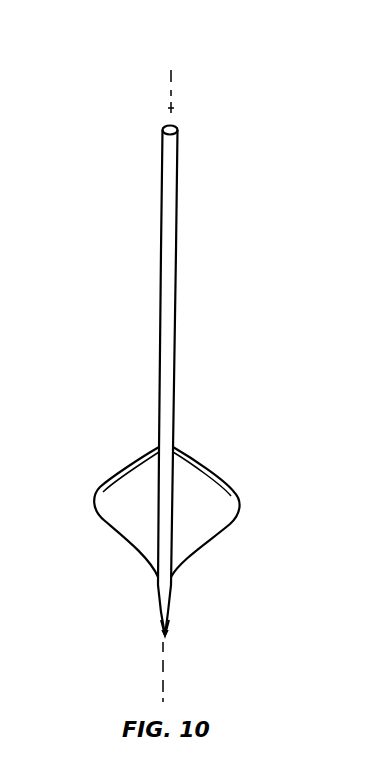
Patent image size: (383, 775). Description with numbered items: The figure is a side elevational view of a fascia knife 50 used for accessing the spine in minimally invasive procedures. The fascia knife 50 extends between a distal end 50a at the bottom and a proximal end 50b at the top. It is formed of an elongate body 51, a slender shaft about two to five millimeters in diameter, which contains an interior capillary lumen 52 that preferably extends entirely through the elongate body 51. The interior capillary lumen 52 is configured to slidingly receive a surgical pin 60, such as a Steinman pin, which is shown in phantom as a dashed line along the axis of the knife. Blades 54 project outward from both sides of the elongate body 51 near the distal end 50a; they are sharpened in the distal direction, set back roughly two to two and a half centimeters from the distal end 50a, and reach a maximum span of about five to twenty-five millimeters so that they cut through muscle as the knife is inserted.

The fascia knife 50 is at (134, 73).
The distal end 50a is at (160, 638).
The proximal end 50b is at (165, 125).
The elongate body 51 is at (185, 332).
The interior capillary lumen 52 is at (170, 635).
The blades 54 is at (113, 527).
The surgical pin 60 is at (180, 107).